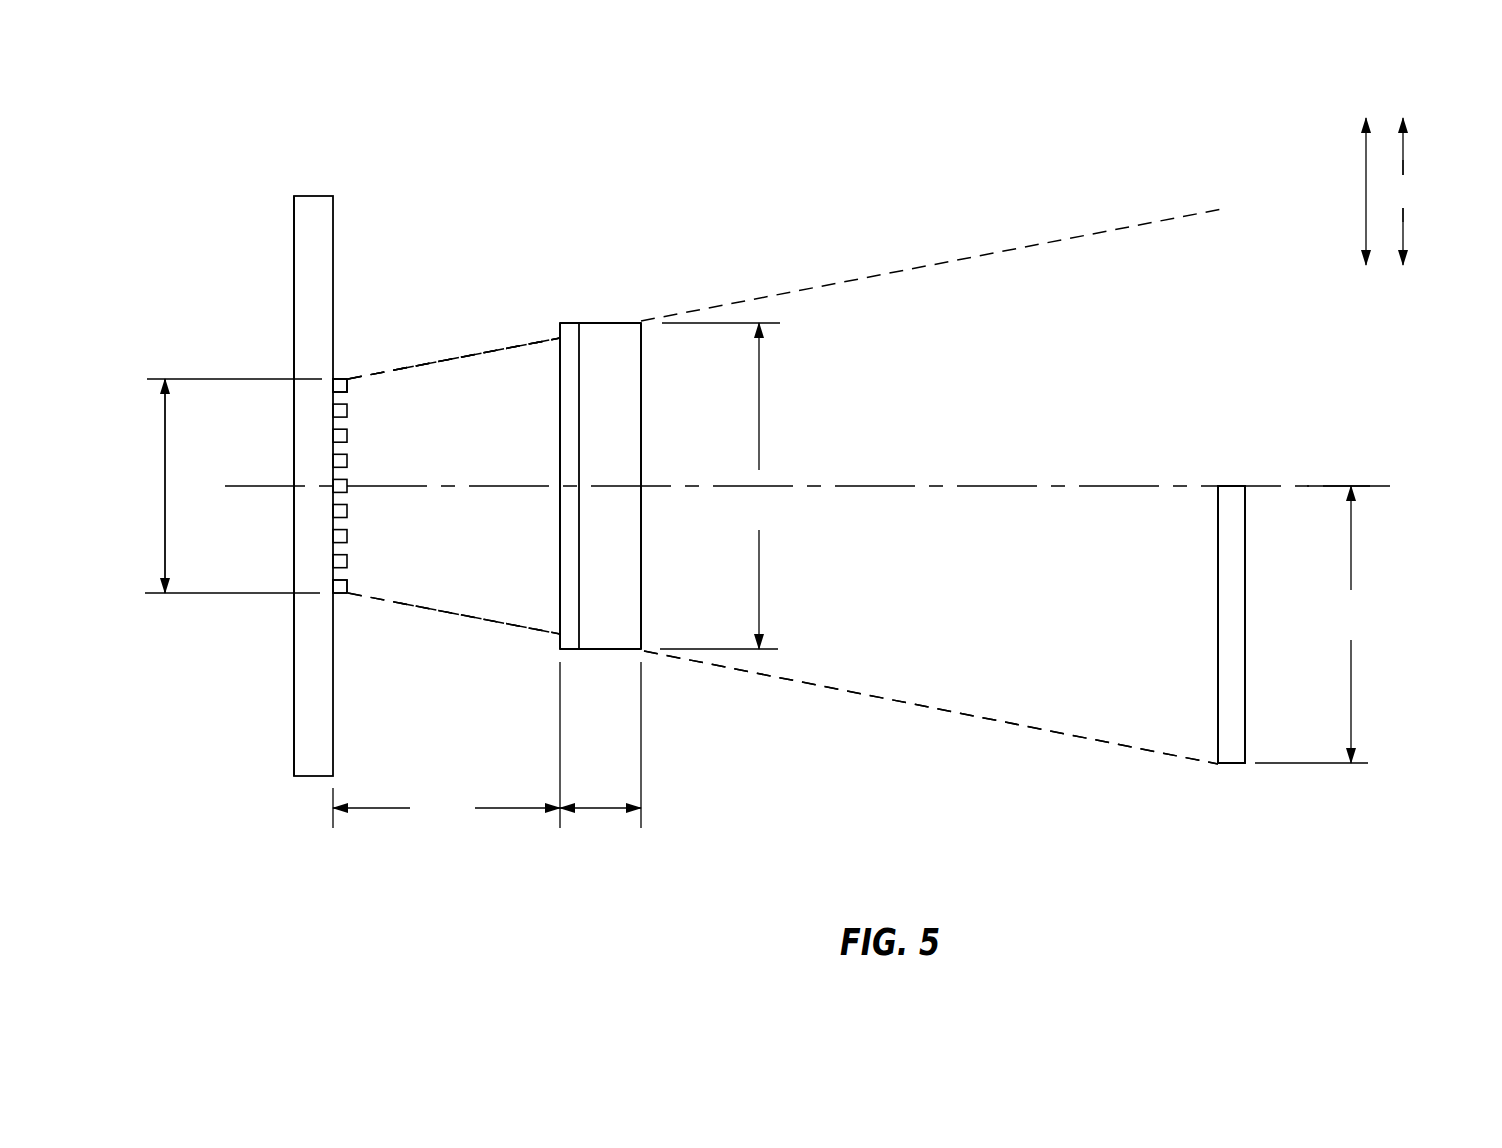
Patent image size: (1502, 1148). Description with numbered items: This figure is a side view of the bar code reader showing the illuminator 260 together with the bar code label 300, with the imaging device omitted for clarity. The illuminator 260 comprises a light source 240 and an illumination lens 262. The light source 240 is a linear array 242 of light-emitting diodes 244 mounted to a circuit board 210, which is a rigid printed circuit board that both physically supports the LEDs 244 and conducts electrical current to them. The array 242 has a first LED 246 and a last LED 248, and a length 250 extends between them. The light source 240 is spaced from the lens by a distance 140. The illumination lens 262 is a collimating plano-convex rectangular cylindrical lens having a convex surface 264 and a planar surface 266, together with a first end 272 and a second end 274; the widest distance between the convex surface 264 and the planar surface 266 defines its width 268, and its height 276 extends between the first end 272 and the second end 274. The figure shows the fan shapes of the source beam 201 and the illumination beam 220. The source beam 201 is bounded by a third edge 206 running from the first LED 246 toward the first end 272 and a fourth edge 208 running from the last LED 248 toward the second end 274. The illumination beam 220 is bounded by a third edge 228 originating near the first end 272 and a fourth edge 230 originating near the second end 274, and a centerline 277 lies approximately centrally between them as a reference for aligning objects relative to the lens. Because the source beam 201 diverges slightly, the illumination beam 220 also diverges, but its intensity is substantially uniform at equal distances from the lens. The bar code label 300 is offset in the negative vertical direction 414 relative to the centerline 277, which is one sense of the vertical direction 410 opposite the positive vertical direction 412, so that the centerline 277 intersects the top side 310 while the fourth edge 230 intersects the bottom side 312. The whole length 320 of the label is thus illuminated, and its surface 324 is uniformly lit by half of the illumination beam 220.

The distance between light source array and lens 140 is at (446, 745).
The source beam 201 is at (423, 360).
The third edge 206 is at (490, 348).
The fourth edge 208 is at (503, 624).
The circuit board 210 is at (292, 268).
The illumination beam 220 is at (1083, 738).
The third edge 228 is at (937, 262).
The fourth edge 230 is at (944, 712).
The light source 240 is at (272, 623).
The linear array 242 is at (345, 606).
The light-emitting diodes 244 is at (340, 385).
The first LED 246 is at (333, 385).
The last LED 248 is at (333, 586).
The length 250 is at (233, 486).
The illuminator 260 is at (475, 240).
The illumination lens 262 is at (664, 262).
The convex surface 264 is at (643, 427).
The planar surface 266 is at (558, 572).
The width 268 is at (597, 812).
The first end 272 is at (596, 320).
The second end 274 is at (590, 652).
The height 276 is at (720, 486).
The centerline 277 is at (982, 488).
The bar code label 300 is at (1192, 450).
The top side 310 is at (1231, 484).
The bottom side 312 is at (1230, 766).
The length 320 is at (1313, 624).
The surface 324 is at (1215, 627).
The vertical direction 410 is at (1365, 190).
The positive vertical direction 412 is at (1404, 160).
The negative vertical direction 414 is at (1404, 222).